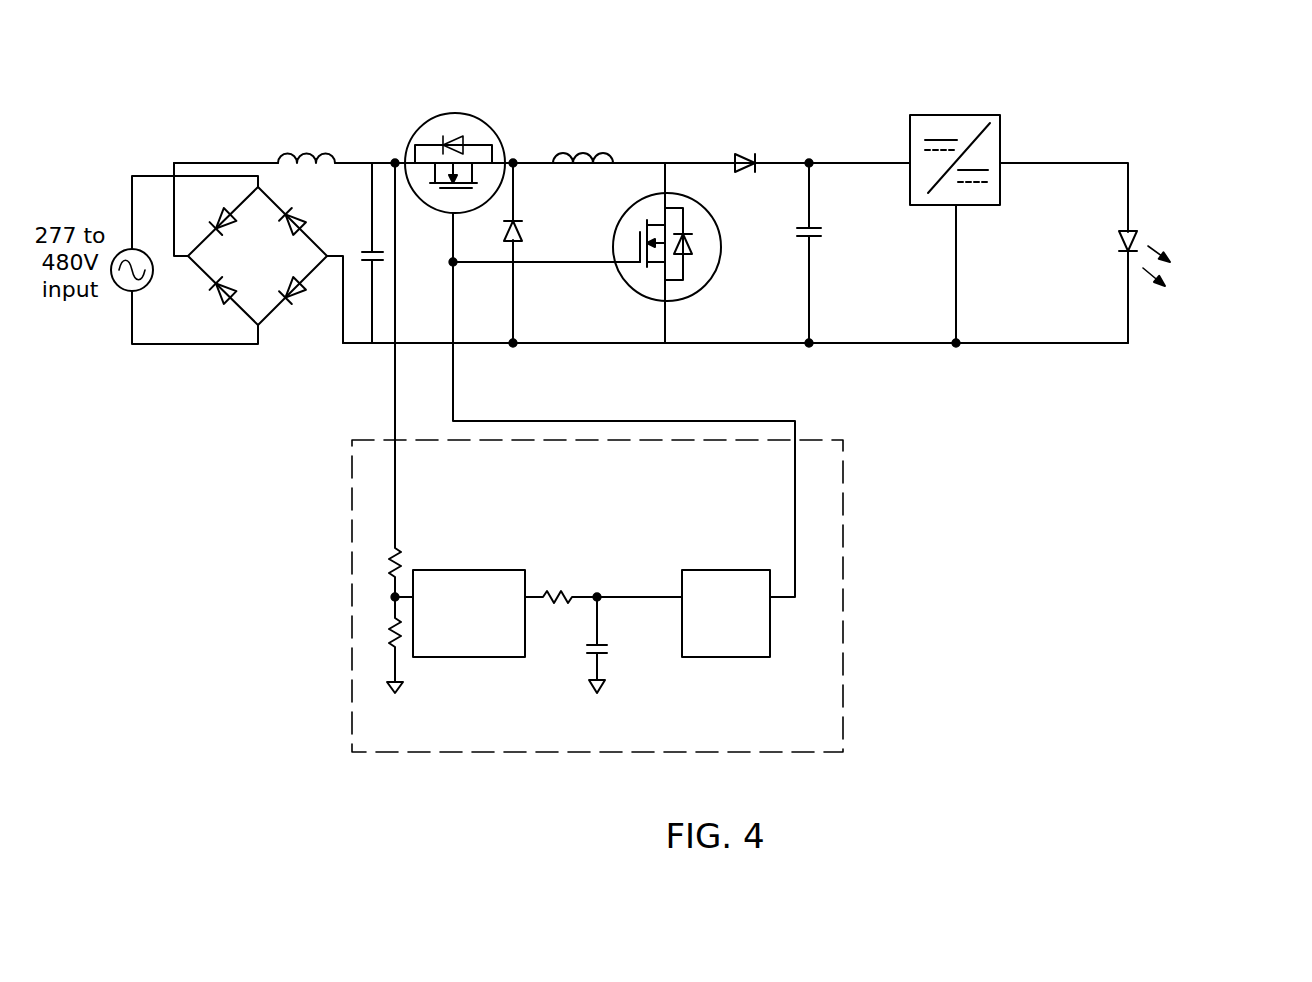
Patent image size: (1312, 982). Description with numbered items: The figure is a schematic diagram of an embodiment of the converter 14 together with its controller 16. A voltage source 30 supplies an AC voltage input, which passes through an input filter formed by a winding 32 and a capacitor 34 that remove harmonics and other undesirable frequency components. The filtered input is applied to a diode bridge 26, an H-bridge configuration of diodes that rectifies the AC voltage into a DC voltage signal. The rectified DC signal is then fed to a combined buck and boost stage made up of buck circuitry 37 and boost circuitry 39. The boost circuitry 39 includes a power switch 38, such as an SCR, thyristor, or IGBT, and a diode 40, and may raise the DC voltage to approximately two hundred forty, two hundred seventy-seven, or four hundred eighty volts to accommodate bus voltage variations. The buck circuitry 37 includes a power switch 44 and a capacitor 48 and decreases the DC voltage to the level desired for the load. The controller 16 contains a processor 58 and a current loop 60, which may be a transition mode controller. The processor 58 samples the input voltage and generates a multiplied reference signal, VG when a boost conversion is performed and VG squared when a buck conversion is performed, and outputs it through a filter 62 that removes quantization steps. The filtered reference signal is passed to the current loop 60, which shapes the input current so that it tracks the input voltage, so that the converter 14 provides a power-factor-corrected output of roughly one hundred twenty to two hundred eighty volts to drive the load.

The converter 14 is at (1113, 134).
The controller 16 is at (843, 597).
The diode bridge 26 is at (270, 314).
The voltage source 30 is at (140, 246).
The winding 32 is at (307, 150).
The capacitor 34 is at (360, 247).
The buck circuitry 37 is at (543, 121).
The power switch 38 is at (432, 215).
The boost circuitry 39 is at (796, 134).
The diode 40 is at (524, 226).
The power switch 44 is at (722, 236).
The capacitor 48 is at (820, 228).
The processor 58 is at (460, 658).
The current loop 60 is at (740, 570).
The filter 62 is at (571, 622).